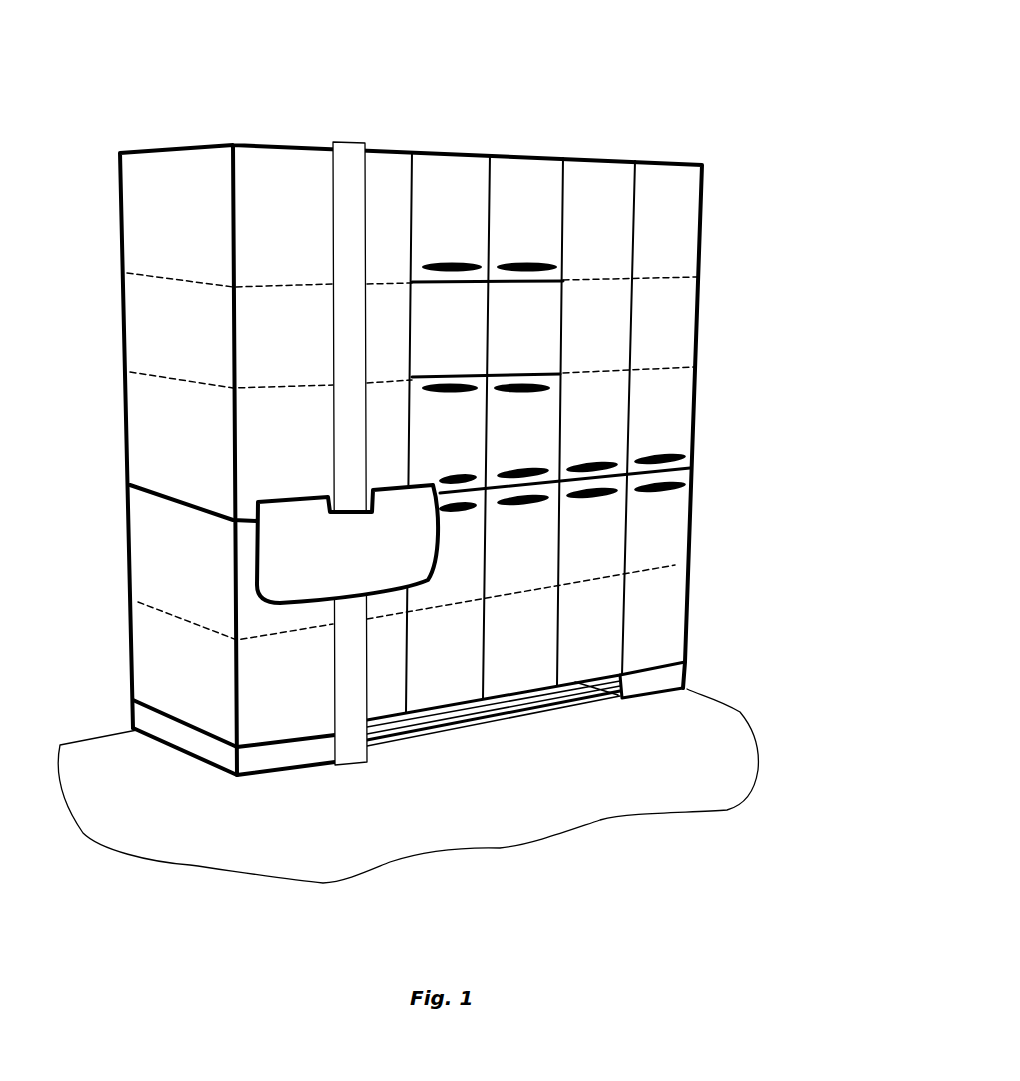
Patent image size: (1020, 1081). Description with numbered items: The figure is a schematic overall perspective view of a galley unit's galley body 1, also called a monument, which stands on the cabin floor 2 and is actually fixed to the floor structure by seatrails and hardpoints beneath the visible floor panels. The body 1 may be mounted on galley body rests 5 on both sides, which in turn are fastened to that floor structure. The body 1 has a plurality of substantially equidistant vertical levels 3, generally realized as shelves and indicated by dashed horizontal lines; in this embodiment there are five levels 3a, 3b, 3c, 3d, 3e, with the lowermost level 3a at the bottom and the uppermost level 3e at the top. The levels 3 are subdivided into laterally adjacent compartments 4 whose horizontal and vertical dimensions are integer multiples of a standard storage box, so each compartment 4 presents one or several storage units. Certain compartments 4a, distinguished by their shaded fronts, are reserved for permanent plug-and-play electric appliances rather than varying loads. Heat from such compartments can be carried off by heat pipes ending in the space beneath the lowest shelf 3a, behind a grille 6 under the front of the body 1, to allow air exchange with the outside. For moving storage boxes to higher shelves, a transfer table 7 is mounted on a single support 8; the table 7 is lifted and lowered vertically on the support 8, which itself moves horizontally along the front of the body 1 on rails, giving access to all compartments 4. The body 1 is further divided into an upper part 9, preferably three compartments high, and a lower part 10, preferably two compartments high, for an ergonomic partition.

The galley body 1 is at (663, 97).
The floor 2 is at (650, 797).
The vertical levels 3 is at (686, 278).
The lowermost level 3a is at (152, 690).
The second vertical level 3b is at (152, 606).
The third vertical level 3c is at (141, 490).
The fourth vertical level 3d is at (143, 375).
The uppermost level 3e is at (143, 275).
The compartments 4 is at (597, 177).
The compartments for electric appliances 4a is at (422, 290).
The galley body rests 5 is at (168, 729).
The grille 6 is at (541, 696).
The transfer table 7 is at (316, 518).
The support 8 is at (343, 166).
The upper part 9 is at (727, 258).
The lower part 10 is at (724, 492).